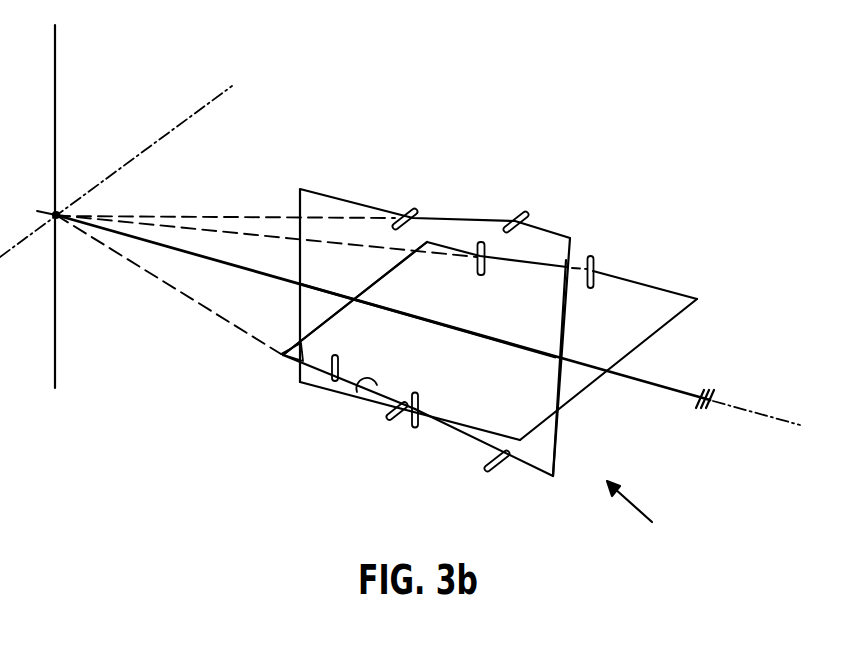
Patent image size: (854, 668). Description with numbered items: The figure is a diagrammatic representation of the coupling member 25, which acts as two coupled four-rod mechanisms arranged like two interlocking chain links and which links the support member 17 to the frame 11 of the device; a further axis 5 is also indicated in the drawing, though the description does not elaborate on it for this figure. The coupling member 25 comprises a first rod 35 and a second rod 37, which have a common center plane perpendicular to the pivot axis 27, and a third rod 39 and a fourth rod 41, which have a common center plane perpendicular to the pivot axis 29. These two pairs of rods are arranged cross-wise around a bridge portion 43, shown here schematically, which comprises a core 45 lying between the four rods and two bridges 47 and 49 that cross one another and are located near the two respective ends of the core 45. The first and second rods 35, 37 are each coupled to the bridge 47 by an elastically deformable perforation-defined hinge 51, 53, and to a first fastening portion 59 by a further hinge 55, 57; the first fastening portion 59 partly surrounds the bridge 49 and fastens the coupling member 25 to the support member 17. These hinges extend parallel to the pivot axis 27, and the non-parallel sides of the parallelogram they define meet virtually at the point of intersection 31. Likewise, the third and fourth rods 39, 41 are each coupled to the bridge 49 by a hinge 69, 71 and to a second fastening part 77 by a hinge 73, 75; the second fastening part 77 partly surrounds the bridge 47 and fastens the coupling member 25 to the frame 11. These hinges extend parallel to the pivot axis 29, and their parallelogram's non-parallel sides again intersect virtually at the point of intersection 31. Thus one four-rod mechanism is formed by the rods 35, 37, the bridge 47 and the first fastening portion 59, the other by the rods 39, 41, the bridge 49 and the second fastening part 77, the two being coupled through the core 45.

The axis of rotation 5 is at (765, 418).
The frame 11 is at (712, 406).
The support member 17 is at (257, 283).
The coupling member 25 is at (662, 552).
The pivot axis 27 is at (197, 110).
The pivot axis 29 is at (55, 372).
The point of intersection 31 is at (55, 208).
The first rod 35 is at (467, 218).
The second rod 37 is at (447, 432).
The third rod 39 is at (537, 268).
The fourth rod 41 is at (358, 391).
The bridge portion 43 is at (419, 299).
The core 45 is at (460, 331).
The bridge 47 is at (570, 322).
The bridge 49 is at (387, 275).
The elastically deformable perforation-defined hinge 51 is at (526, 218).
The elastically deformable perforation-defined hinge 53 is at (497, 471).
The elastically deformable perforation-defined hinge 55 is at (405, 208).
The elastically deformable perforation-defined hinge 57 is at (392, 416).
The first fastening portion 59 is at (298, 197).
The elastically deformable perforation-defined hinge 69 is at (487, 253).
The elastically deformable perforation-defined hinge 71 is at (300, 388).
The elastically deformable perforation-defined hinge 73 is at (596, 262).
The elastically deformable perforation-defined hinge 75 is at (420, 407).
The second fastening part 77 is at (677, 312).